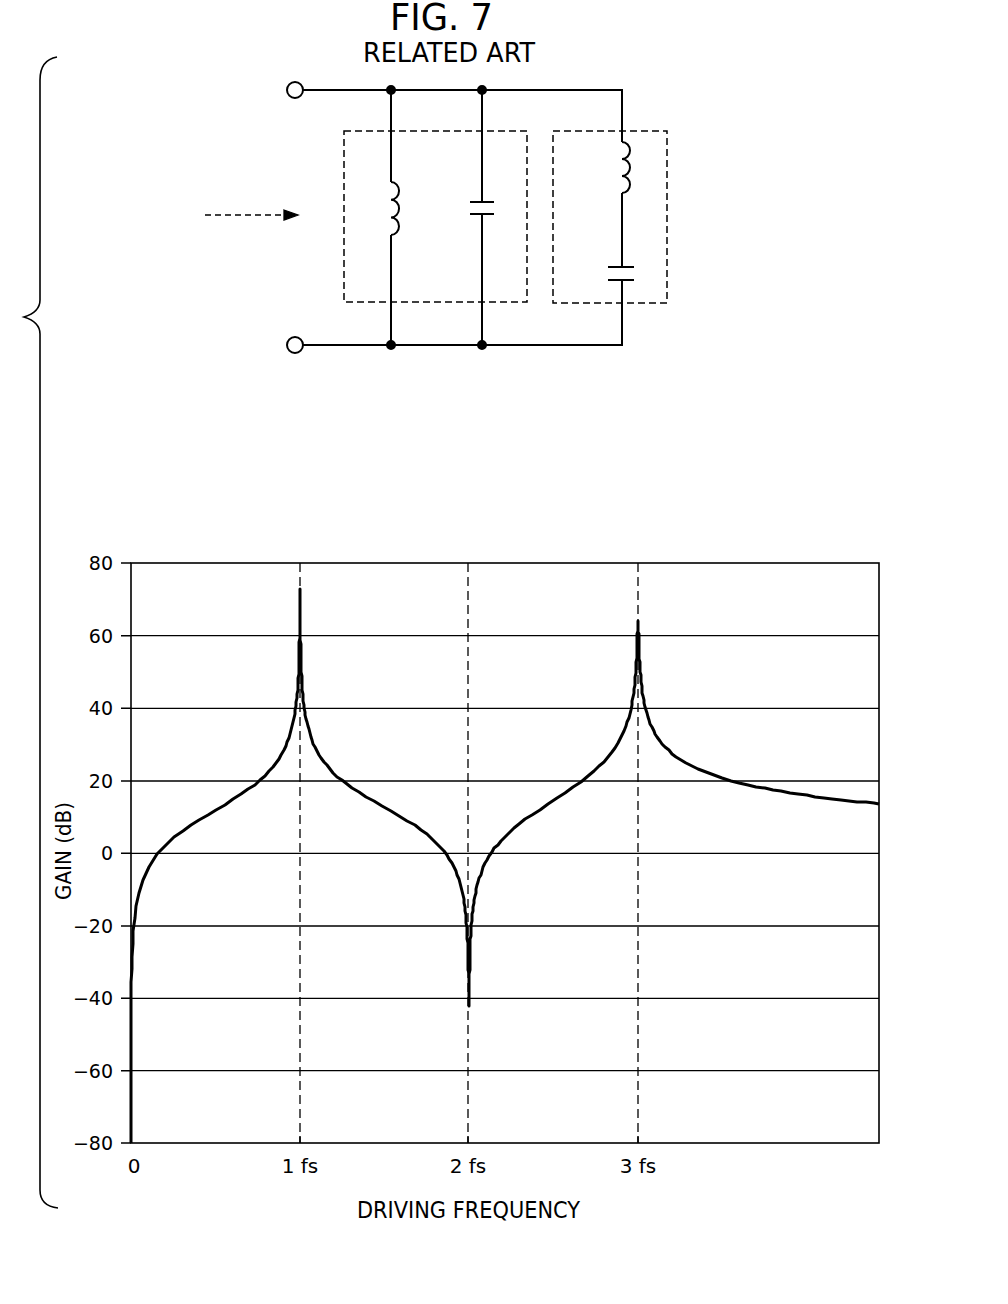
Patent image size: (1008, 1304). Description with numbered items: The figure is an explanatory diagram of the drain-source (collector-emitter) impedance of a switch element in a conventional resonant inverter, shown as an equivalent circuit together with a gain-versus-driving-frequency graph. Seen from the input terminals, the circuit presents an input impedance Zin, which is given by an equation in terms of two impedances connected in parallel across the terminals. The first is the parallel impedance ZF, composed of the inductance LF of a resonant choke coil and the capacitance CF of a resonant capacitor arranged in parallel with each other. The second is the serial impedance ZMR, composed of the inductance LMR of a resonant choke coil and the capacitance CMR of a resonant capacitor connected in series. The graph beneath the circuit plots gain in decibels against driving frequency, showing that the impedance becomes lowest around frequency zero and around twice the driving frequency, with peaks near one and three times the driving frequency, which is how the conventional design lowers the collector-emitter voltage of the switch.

The input impedance Zin is at (251, 205).
The parallel impedance ZF is at (433, 124).
The inductance of resonant choke coil LF is at (396, 238).
The capacitance of resonant capacitor CF is at (468, 207).
The serial impedance ZMR is at (638, 132).
The inductance of resonant choke coil LMR is at (637, 165).
The capacitance of resonant capacitor CMR is at (630, 272).